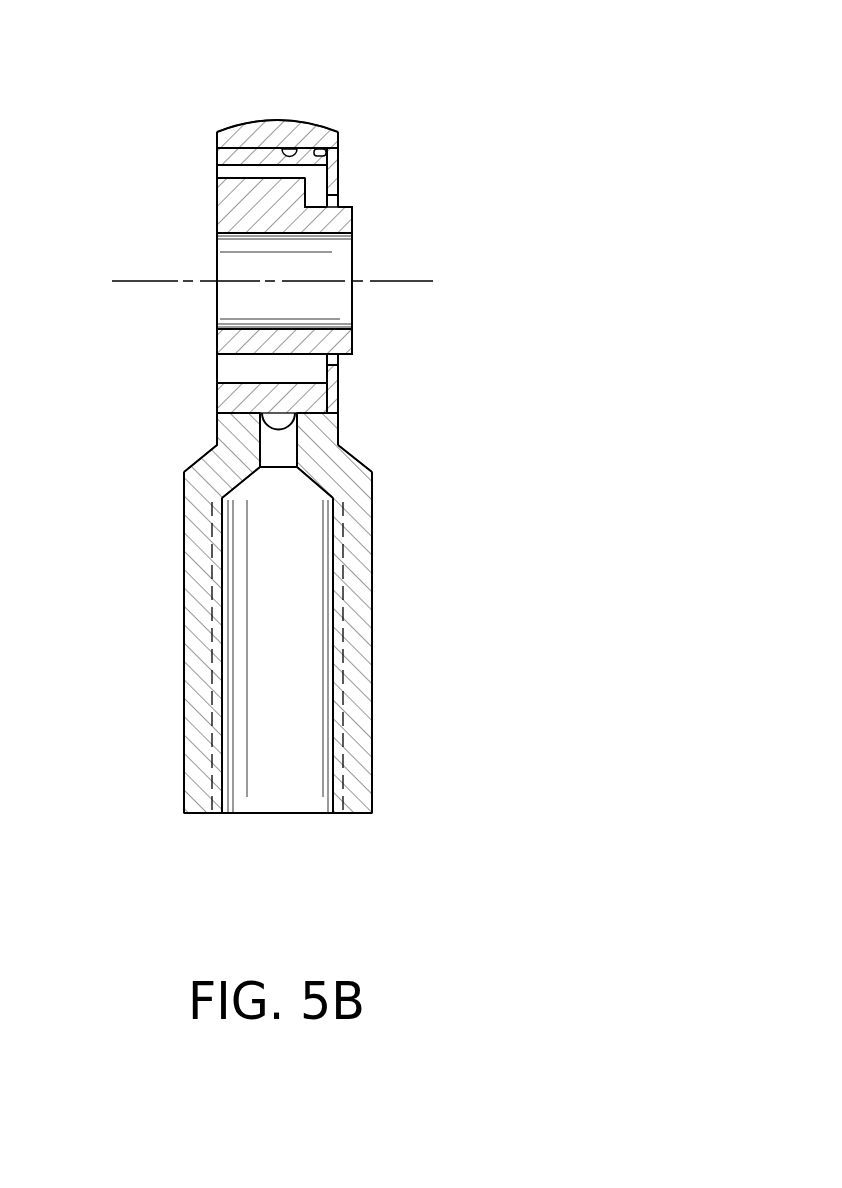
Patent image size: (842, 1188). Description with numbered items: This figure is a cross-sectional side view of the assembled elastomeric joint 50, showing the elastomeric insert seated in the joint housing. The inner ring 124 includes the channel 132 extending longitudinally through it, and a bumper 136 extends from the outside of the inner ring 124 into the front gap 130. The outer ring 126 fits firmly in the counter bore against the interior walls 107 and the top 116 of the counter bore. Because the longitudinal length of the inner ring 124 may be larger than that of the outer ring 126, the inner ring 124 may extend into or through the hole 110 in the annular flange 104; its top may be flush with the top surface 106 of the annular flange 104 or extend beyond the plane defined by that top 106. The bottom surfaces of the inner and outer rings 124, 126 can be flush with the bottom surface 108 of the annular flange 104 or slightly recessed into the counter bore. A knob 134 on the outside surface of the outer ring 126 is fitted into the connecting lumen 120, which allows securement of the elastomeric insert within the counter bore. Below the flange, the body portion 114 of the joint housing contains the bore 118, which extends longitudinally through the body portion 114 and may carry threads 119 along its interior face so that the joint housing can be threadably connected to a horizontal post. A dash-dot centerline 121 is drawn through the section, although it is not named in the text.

The elastomeric joint 50 is at (443, 58).
The annular flange 104 is at (268, 120).
The top surface of the annular flange 106 is at (340, 168).
The interior walls of the counter bore 107 is at (297, 154).
The bottom surface of the annular flange 108 is at (217, 140).
The hole 110 is at (337, 359).
The body portion 114 is at (200, 670).
The top of the counter bore 116 is at (322, 150).
The bore 118 is at (278, 795).
The threads 119 is at (340, 807).
The connecting lumen 120 is at (278, 455).
The longitudinal axis 121 is at (132, 280).
The inner ring 124 is at (342, 222).
The outer ring 126 is at (226, 154).
The front gap 130 is at (316, 186).
The channel 132 is at (329, 303).
The knob 134 is at (287, 425).
The bumper 136 is at (290, 185).